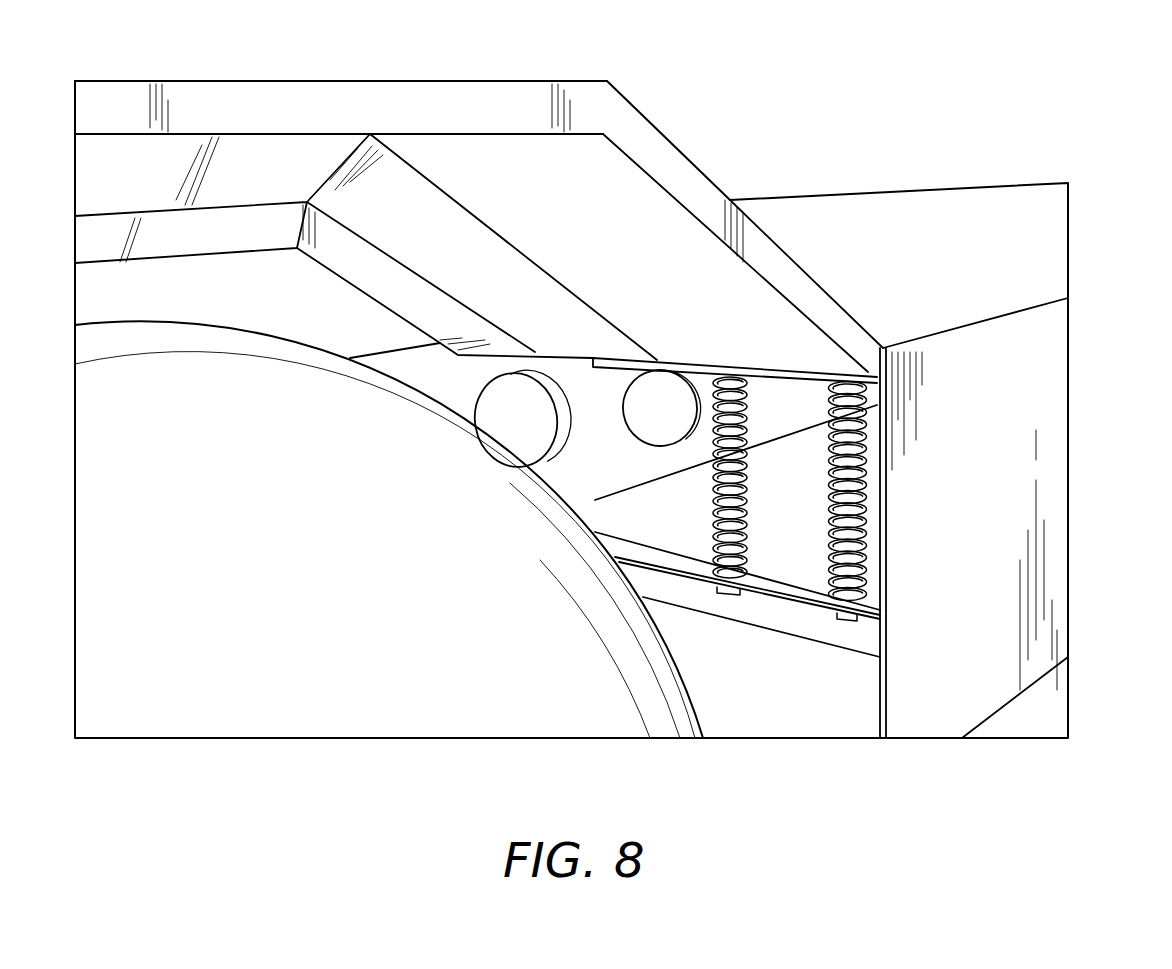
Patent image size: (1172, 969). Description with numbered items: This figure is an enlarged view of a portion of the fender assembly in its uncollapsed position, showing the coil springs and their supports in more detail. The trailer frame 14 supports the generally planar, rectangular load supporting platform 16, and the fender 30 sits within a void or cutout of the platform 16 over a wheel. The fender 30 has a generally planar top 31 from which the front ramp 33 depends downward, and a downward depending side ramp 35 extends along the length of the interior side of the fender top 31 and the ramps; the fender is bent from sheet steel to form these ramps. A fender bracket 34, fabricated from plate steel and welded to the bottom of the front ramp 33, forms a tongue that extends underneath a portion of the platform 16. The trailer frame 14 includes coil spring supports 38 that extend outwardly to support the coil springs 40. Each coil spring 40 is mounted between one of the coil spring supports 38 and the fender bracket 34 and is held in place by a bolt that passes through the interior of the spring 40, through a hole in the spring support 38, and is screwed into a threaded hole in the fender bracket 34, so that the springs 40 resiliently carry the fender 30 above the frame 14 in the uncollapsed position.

The frame 14 is at (603, 454).
The load supporting deck or platform 16 is at (951, 274).
The fender 30 is at (263, 102).
The fender top 31 is at (410, 80).
The front ramp 33 is at (580, 205).
The side ramp 35 is at (446, 240).
The fender bracket 34 is at (862, 380).
The coil spring support 38 is at (800, 585).
The coil spring 40 is at (747, 548).